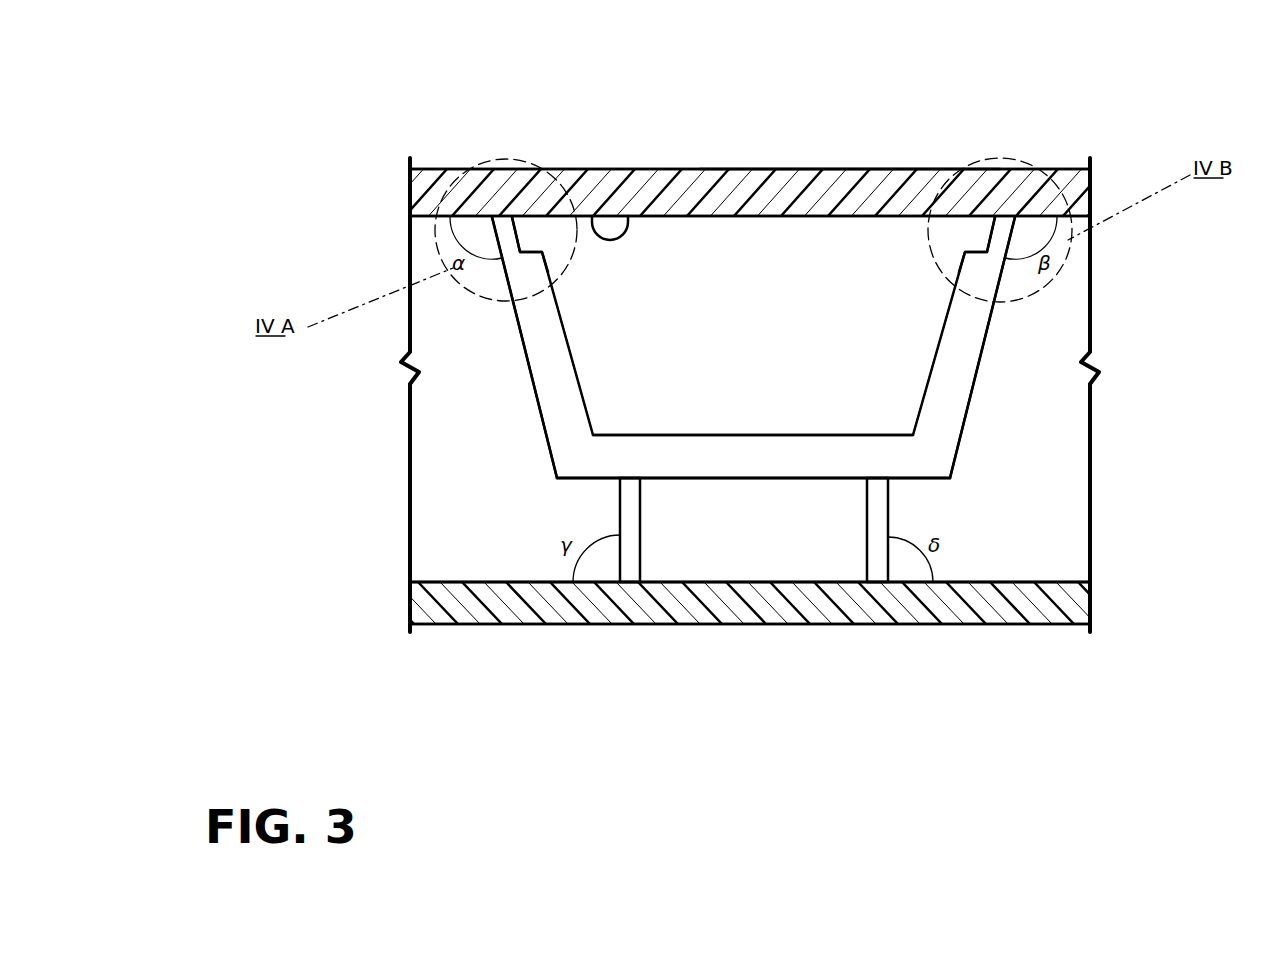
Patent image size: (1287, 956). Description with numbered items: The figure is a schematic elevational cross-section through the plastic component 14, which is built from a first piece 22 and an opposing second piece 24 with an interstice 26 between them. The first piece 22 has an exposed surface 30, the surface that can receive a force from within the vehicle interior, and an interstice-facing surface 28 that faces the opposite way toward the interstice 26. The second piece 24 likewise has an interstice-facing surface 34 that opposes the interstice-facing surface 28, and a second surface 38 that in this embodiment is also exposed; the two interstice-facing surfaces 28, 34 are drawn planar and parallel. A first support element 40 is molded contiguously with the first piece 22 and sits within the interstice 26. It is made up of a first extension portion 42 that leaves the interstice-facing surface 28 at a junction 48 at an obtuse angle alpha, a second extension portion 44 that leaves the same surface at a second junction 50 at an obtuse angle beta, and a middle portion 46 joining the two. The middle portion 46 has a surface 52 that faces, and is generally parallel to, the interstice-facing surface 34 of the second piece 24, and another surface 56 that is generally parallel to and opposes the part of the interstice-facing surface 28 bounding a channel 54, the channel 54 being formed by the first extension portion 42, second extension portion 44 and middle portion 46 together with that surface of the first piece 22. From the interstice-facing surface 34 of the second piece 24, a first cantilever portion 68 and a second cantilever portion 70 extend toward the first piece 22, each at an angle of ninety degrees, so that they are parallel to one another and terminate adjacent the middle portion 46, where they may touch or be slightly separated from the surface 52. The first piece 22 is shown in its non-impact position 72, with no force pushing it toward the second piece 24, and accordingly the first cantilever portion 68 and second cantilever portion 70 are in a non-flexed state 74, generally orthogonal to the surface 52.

The plastic component 14 is at (252, 124).
The first piece 22 is at (524, 198).
The second piece 24 is at (458, 600).
The interstice 26 is at (1007, 458).
The interstice-facing surface 28 is at (628, 216).
The exposed surface 30 is at (577, 170).
The interstice-facing surface 34 is at (487, 557).
The second surface 38 is at (795, 624).
The first support element 40 is at (525, 416).
The first extension portion 42 is at (545, 366).
The second extension portion 44 is at (975, 345).
The middle portion 46 is at (778, 455).
The junction 48 is at (489, 219).
The second junction 50 is at (965, 172).
The surface 52 is at (750, 478).
The channel 54 is at (622, 310).
The another surface 56 is at (683, 435).
The first cantilever portion 68 is at (627, 548).
The second cantilever portion 70 is at (873, 542).
The non-impact position 72 is at (830, 152).
The non-flexed state 74 is at (598, 499).